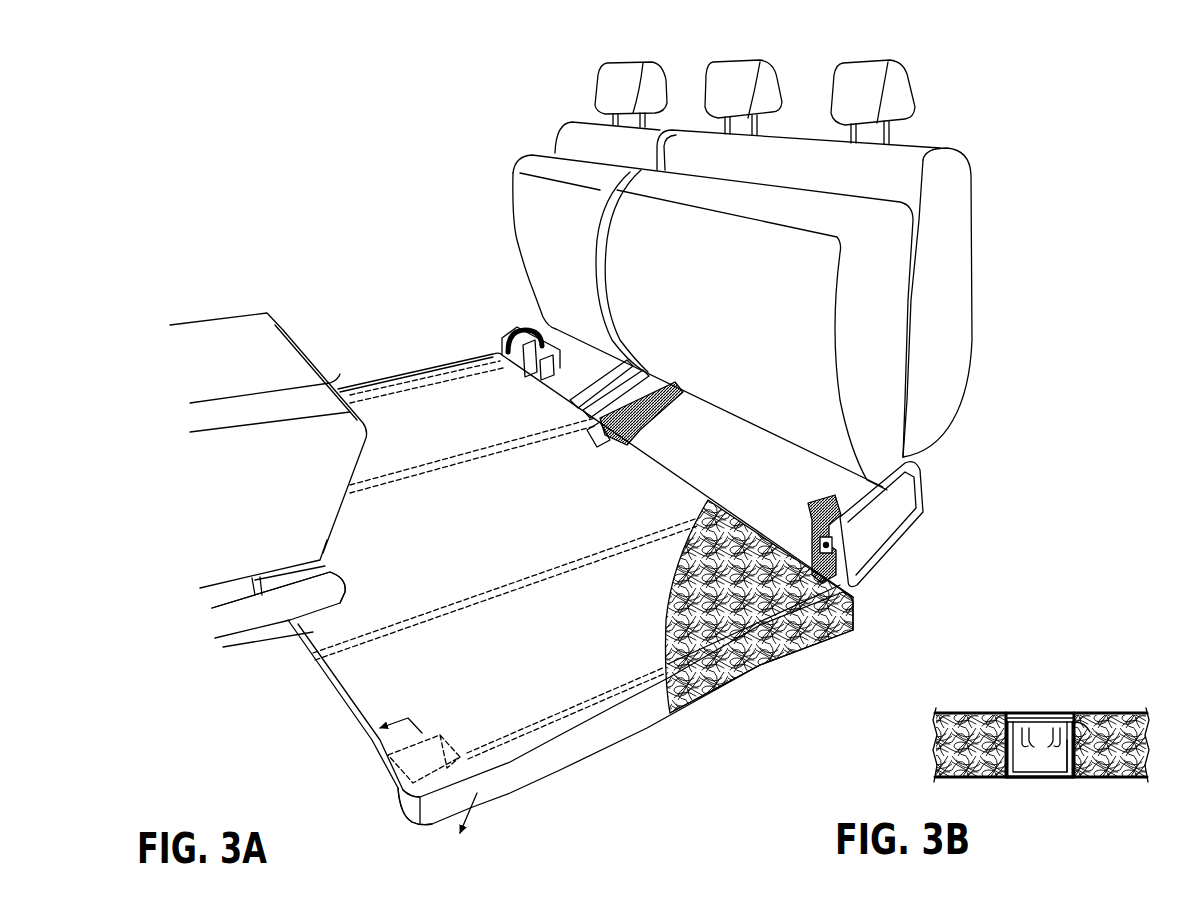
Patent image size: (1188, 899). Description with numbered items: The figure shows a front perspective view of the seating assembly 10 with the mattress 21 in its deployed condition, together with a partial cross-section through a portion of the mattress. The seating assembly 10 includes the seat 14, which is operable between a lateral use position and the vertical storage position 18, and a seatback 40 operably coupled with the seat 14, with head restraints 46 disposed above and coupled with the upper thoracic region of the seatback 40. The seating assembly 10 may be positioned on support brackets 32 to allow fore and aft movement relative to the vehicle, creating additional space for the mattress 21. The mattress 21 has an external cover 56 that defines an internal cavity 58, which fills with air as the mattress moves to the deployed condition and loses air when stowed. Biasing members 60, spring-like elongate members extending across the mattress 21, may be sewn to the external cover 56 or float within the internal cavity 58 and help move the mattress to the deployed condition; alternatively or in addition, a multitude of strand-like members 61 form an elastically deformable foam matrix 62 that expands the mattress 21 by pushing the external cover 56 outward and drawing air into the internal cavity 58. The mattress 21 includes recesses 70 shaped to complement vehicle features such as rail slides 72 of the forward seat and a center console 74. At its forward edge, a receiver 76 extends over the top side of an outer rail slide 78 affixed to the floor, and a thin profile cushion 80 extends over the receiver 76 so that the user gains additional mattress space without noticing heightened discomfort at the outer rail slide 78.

In FIG. 3A, the seating assembly 10 is at (481, 136).
In FIG. 3A, the seat 14 is at (868, 315).
In FIG. 3A, the vertical storage position 18 is at (496, 232).
In FIG. 3A, the mattress 21 is at (523, 570).
In FIG. 3B, the mattress 21 is at (1115, 740).
In FIG. 3A, the support bracket 32 is at (900, 518).
In FIG. 3A, the seatback 40 is at (950, 212).
In FIG. 3A, the head restraint 46 is at (613, 93).
In FIG. 3A, the external cover 56 is at (468, 402).
In FIG. 3A, the internal cavity 58 is at (708, 707).
In FIG. 3A, the biasing member 60 is at (422, 373).
In FIG. 3B, the biasing member 60 is at (1082, 720).
In FIG. 3A, the strand-like member 61 is at (853, 607).
In FIG. 3A, the foam matrix 62 is at (773, 670).
In FIG. 3A, the recess 70 is at (338, 558).
In FIG. 3B, the recess 70 is at (1010, 777).
In FIG. 3A, the rail slide 72 is at (247, 617).
In FIG. 3A, the center console 74 is at (288, 516).
In FIG. 3A, the receiver 76 is at (460, 758).
In FIG. 3B, the receiver 76 is at (1040, 724).
In FIG. 3A, the outer rail slide 78 is at (357, 787).
In FIG. 3B, the outer rail slide 78 is at (1067, 773).
In FIG. 3A, the thin profile cushion 80 is at (402, 790).
In FIG. 3B, the thin profile cushion 80 is at (1038, 714).